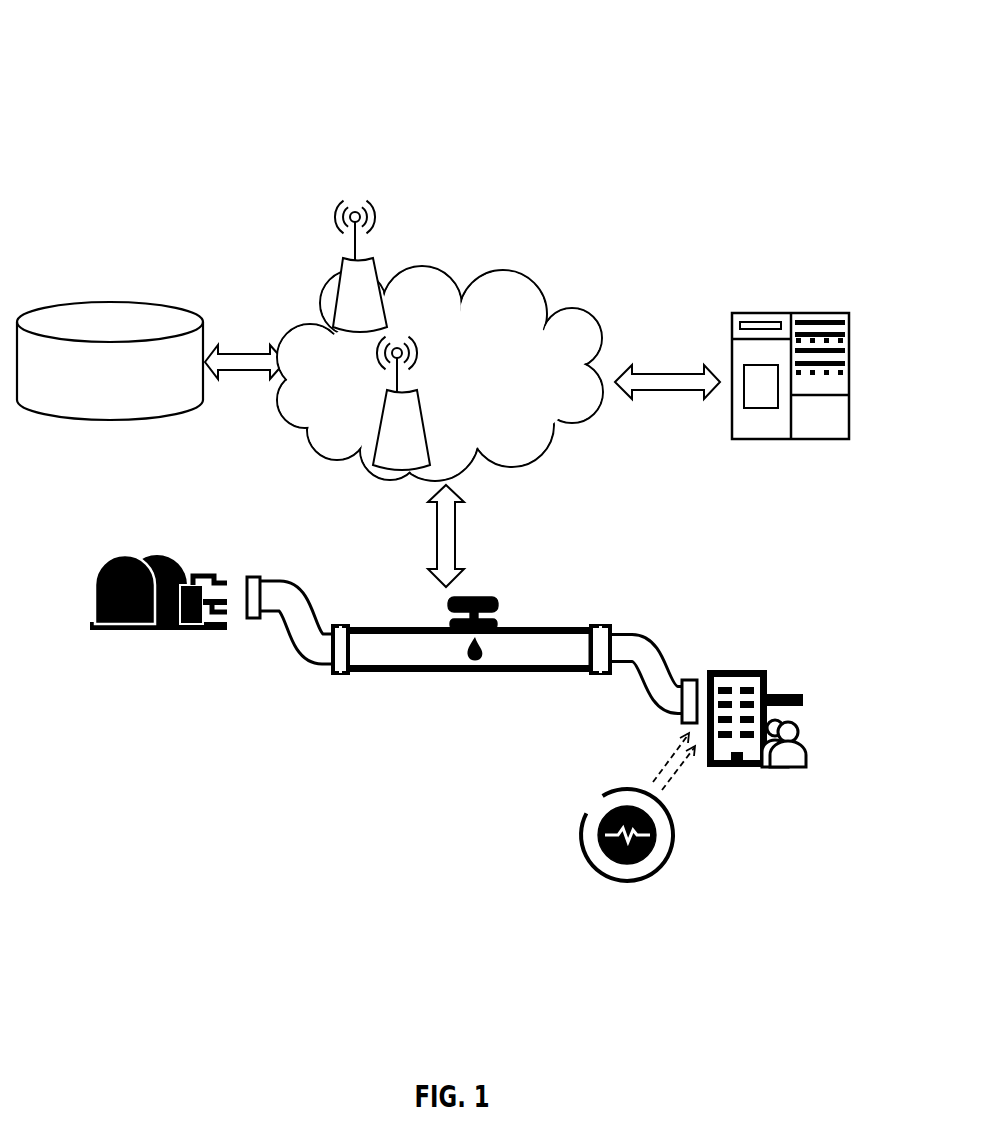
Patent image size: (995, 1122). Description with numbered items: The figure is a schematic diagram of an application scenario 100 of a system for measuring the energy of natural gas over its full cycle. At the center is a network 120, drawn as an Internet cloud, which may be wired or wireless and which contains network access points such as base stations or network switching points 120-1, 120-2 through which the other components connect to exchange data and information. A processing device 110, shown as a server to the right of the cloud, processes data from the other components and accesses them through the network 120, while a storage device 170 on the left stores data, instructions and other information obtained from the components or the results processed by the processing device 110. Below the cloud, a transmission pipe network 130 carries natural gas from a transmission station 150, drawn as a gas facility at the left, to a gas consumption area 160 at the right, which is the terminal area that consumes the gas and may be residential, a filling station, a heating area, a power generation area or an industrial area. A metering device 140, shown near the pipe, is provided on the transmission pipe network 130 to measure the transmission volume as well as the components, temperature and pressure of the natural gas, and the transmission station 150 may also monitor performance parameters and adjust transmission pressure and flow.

The application scenario 100 is at (93, 48).
The processing device 110 is at (848, 315).
The network 120 is at (572, 307).
The network access point 120-1 is at (343, 278).
The network access point 120-2 is at (420, 447).
The transmission pipe network 130 is at (533, 630).
The metering device 140 is at (675, 842).
The transmission station 150 is at (112, 552).
The gas consumption area 160 is at (803, 710).
The storage device 170 is at (92, 300).